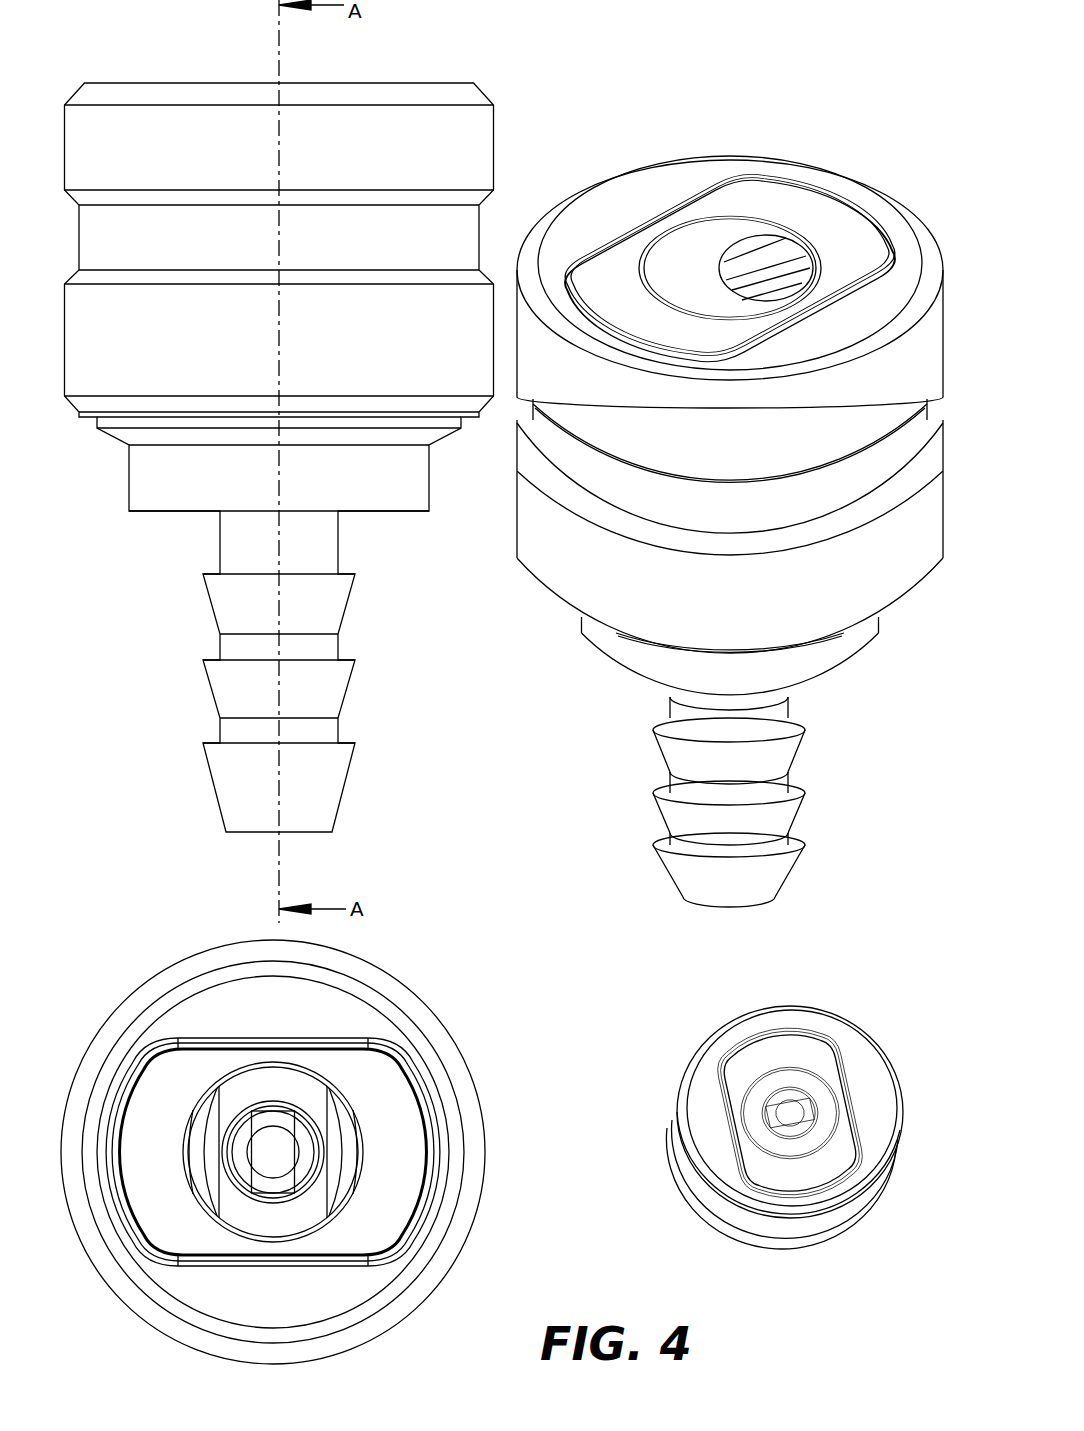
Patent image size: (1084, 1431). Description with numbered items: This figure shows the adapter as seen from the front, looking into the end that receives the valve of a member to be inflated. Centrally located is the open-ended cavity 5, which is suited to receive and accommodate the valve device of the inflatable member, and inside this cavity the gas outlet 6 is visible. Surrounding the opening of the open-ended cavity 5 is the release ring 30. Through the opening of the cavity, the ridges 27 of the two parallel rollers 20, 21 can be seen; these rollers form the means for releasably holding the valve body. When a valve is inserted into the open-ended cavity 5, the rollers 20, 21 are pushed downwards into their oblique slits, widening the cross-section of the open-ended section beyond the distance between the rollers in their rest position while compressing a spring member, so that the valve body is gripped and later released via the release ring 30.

The open-ended cavity 5 is at (304, 1078).
The gas outlet 6 is at (375, 1091).
The roller 20 is at (143, 1216).
The roller 21 is at (425, 1189).
The ridges 27 is at (153, 1079).
The release ring 30 is at (331, 1152).